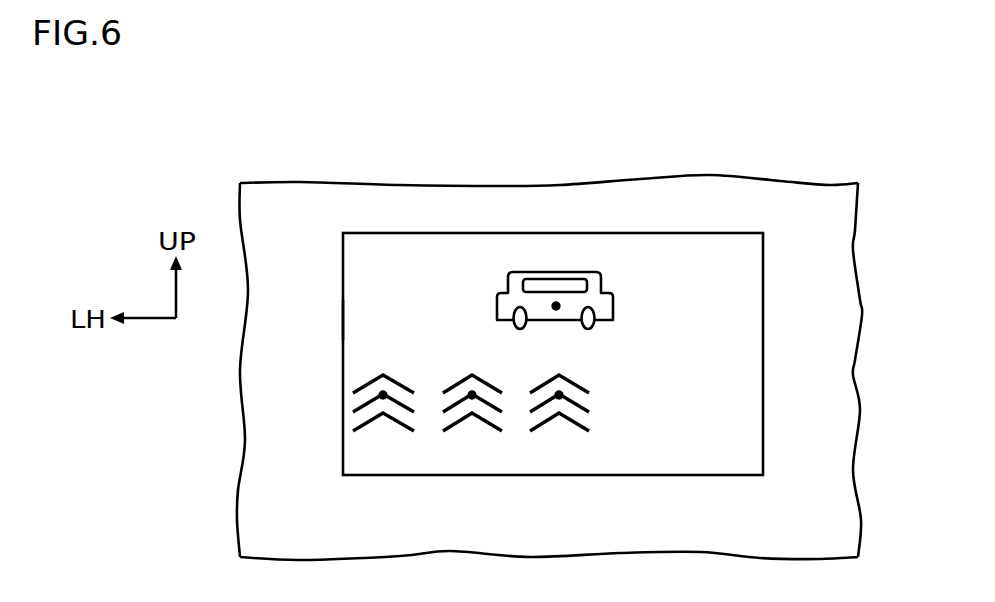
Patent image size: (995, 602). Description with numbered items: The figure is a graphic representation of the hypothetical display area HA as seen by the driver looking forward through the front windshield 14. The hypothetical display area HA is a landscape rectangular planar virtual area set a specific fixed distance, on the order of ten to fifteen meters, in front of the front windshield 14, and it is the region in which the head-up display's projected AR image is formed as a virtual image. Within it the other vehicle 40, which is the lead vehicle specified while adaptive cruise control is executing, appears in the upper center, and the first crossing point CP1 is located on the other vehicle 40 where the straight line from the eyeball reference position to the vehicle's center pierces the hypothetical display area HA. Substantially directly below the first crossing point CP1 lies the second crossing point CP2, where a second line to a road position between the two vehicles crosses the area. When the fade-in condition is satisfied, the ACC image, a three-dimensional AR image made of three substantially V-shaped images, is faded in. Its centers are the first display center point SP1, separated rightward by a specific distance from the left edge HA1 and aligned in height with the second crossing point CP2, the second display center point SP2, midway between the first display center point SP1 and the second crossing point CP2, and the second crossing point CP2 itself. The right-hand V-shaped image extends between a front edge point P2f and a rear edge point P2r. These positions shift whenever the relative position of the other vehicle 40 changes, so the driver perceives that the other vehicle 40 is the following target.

The front windshield 14 is at (805, 197).
The hypothetical display area HA is at (681, 233).
The left edge of hypothetical display area HA1 is at (343, 320).
The other vehicle 40 is at (598, 292).
The first crossing point CP1 is at (556, 302).
The first display center point SP1 is at (380, 395).
The second display center point SP2 is at (474, 396).
The front pattern of second display image P2f is at (560, 375).
The second crossing point CP2 is at (562, 395).
The rear pattern of second display image P2r is at (530, 431).